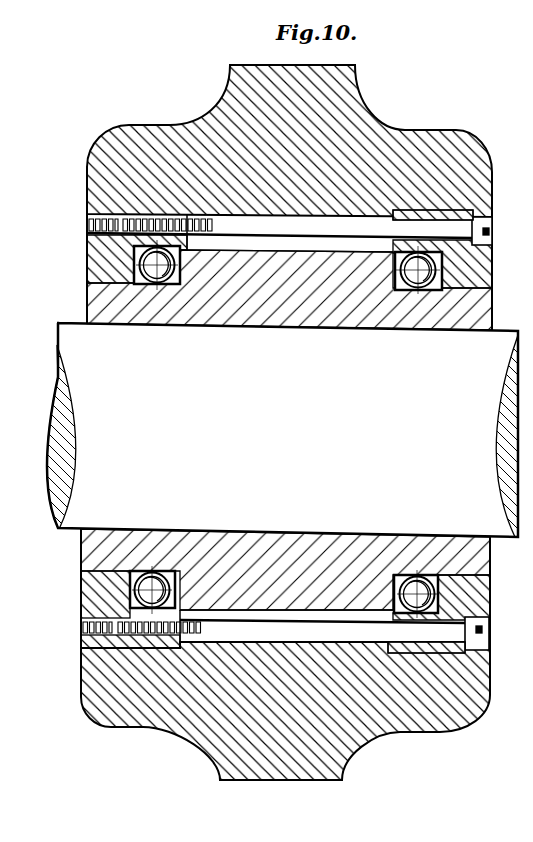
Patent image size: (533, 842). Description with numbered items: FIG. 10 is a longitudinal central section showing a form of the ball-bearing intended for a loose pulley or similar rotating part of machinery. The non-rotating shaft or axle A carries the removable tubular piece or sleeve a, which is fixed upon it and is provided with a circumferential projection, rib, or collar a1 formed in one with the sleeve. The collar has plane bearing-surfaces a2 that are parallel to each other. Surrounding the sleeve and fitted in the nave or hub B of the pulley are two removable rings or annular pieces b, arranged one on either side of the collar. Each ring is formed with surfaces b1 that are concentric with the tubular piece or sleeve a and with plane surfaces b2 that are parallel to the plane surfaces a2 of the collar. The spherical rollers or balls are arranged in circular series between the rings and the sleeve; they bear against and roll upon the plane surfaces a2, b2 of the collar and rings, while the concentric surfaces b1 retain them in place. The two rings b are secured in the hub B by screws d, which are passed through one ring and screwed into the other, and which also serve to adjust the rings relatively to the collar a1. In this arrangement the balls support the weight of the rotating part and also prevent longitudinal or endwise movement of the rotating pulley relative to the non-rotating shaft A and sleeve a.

The shaft or axle A is at (282, 430).
The nave or hub B is at (286, 422).
The tubular piece or sleeve a is at (286, 430).
The rib or collar a1 is at (286, 430).
The plane bearing-surfaces a2 is at (180, 267).
The rings or annular pieces b is at (87, 252).
The concentric surfaces b1 is at (398, 255).
The plane surfaces b2 is at (134, 266).
The screws d is at (492, 225).